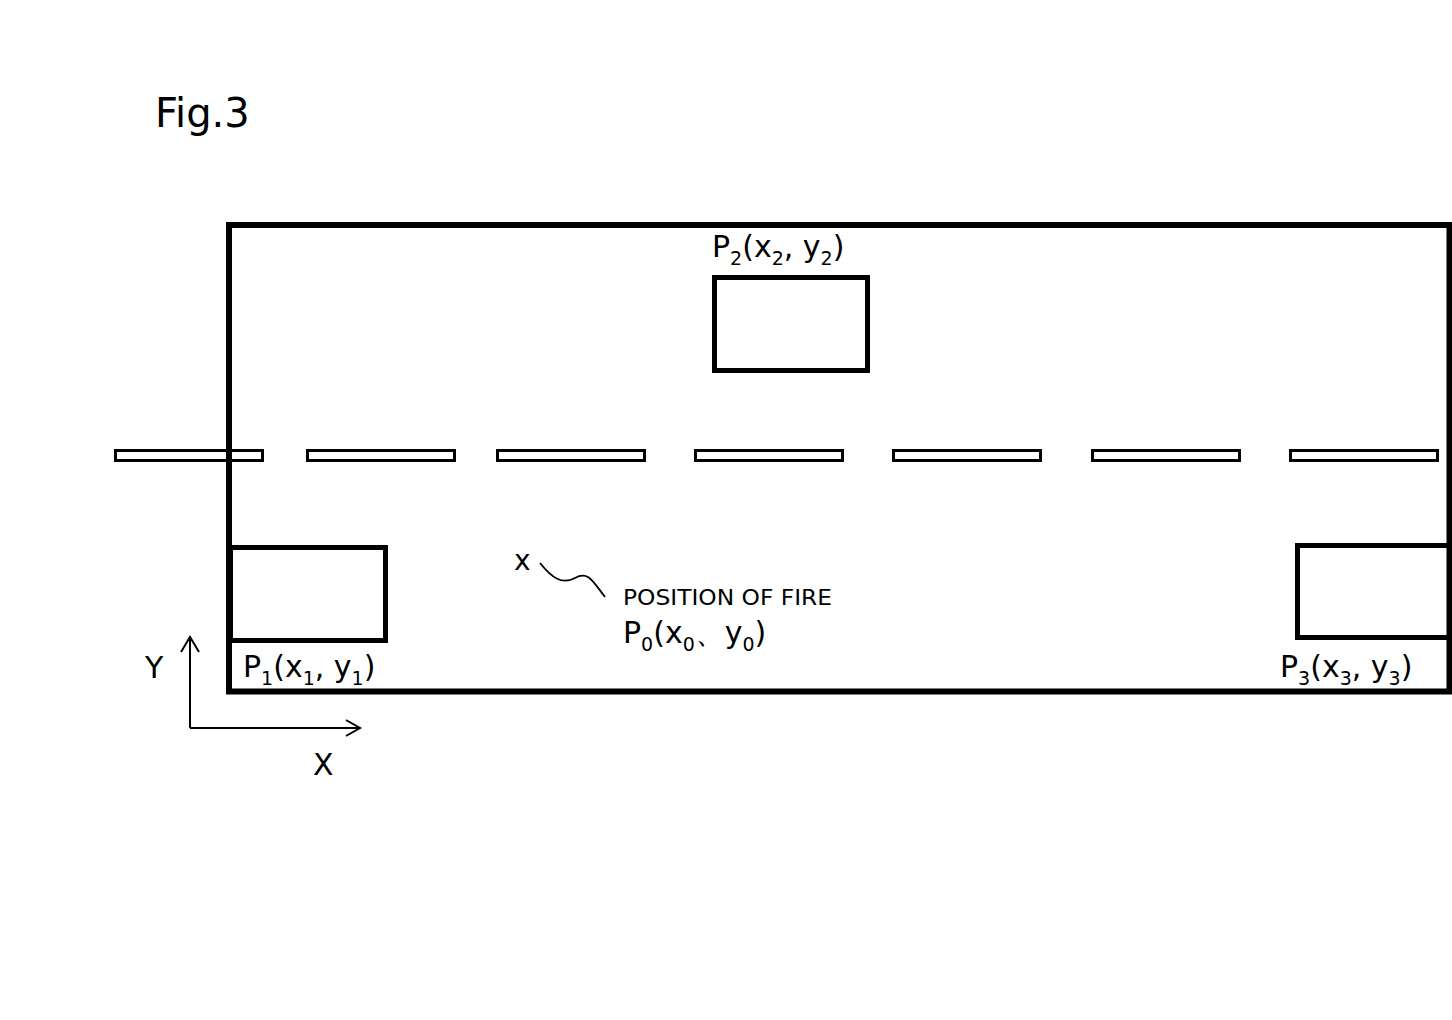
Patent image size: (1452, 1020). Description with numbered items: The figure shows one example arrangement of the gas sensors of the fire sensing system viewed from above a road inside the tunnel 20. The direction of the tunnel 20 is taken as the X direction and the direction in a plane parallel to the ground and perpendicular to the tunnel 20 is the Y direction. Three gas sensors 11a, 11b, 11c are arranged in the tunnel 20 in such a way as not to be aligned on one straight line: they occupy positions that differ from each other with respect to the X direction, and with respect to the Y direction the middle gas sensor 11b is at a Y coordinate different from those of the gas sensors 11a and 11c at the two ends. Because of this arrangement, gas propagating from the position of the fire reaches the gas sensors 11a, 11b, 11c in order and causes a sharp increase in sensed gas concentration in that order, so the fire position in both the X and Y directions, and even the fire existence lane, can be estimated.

The tunnel 20 is at (1017, 223).
The gas sensor 11a is at (325, 545).
The gas sensor 11b is at (870, 321).
The gas sensor 11c is at (1358, 543).